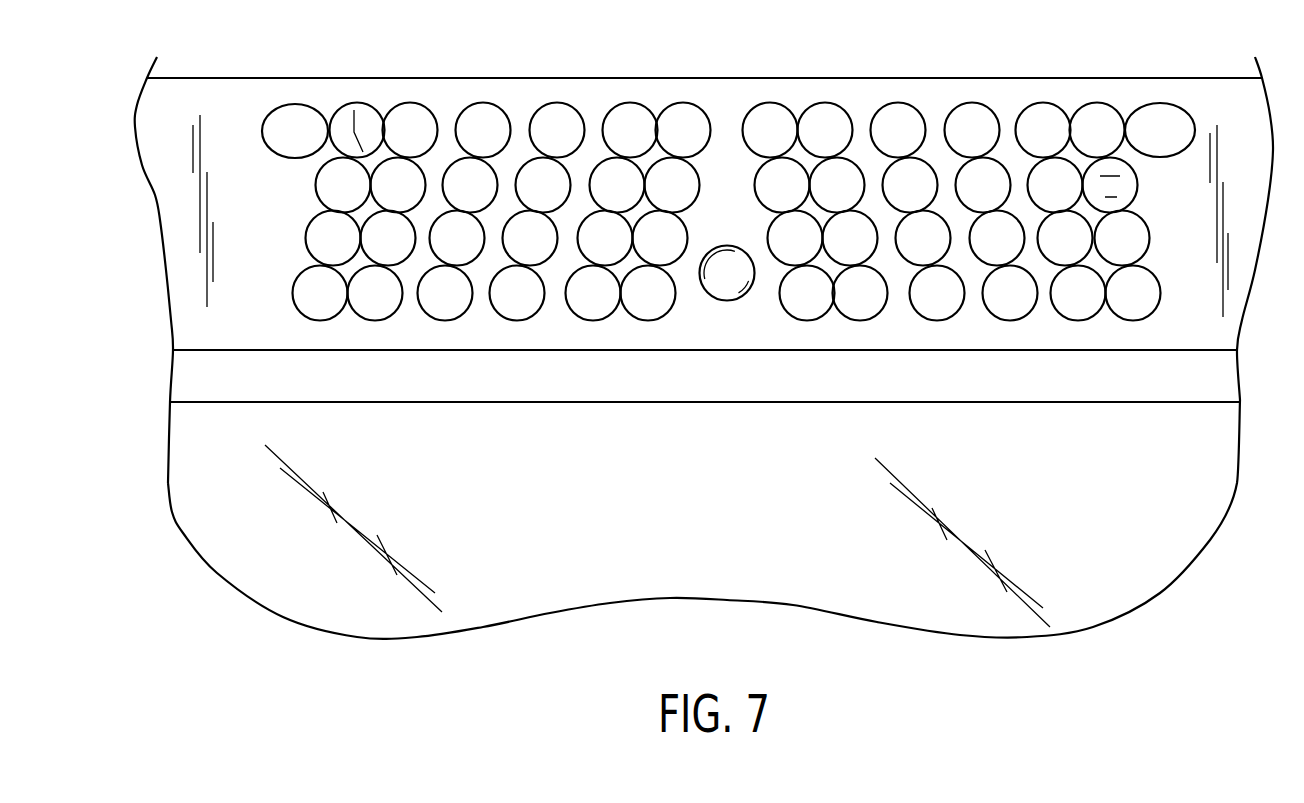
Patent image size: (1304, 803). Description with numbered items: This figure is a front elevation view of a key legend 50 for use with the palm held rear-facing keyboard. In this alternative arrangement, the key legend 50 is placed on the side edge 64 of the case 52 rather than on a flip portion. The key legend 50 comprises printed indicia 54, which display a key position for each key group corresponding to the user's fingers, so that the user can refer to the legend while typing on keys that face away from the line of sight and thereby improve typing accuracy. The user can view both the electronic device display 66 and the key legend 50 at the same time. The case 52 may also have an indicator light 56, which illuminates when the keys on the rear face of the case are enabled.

The key legend 50 is at (303, 70).
The case 52 is at (150, 105).
The printed indicia 54 is at (548, 115).
The indicator light 56 is at (715, 293).
The side edge 64 is at (245, 227).
The electronic device display 66 is at (502, 509).